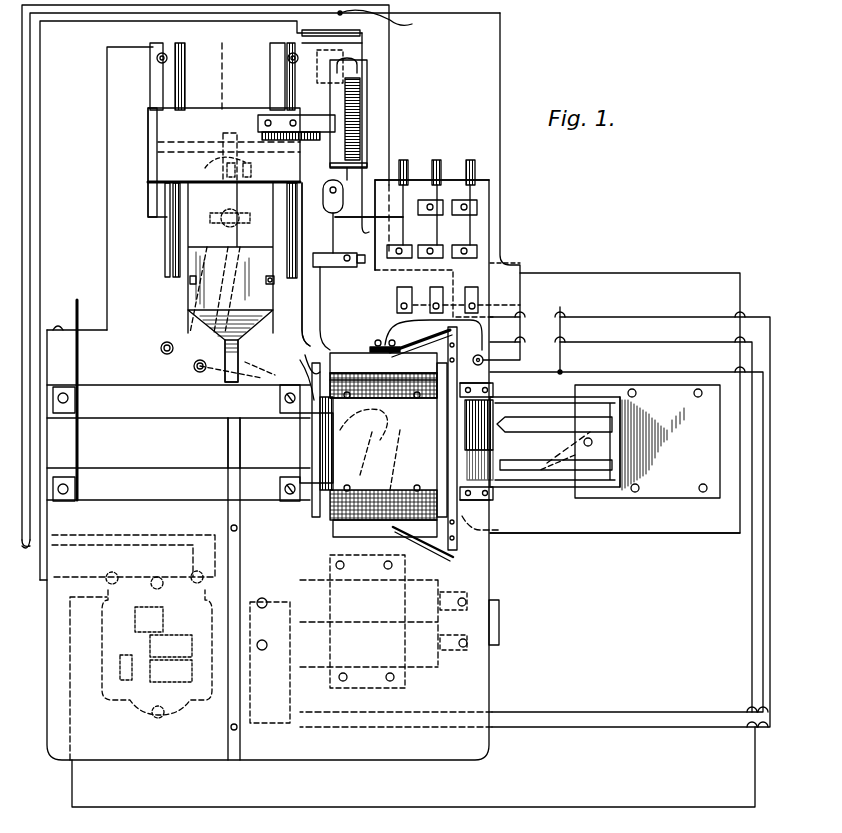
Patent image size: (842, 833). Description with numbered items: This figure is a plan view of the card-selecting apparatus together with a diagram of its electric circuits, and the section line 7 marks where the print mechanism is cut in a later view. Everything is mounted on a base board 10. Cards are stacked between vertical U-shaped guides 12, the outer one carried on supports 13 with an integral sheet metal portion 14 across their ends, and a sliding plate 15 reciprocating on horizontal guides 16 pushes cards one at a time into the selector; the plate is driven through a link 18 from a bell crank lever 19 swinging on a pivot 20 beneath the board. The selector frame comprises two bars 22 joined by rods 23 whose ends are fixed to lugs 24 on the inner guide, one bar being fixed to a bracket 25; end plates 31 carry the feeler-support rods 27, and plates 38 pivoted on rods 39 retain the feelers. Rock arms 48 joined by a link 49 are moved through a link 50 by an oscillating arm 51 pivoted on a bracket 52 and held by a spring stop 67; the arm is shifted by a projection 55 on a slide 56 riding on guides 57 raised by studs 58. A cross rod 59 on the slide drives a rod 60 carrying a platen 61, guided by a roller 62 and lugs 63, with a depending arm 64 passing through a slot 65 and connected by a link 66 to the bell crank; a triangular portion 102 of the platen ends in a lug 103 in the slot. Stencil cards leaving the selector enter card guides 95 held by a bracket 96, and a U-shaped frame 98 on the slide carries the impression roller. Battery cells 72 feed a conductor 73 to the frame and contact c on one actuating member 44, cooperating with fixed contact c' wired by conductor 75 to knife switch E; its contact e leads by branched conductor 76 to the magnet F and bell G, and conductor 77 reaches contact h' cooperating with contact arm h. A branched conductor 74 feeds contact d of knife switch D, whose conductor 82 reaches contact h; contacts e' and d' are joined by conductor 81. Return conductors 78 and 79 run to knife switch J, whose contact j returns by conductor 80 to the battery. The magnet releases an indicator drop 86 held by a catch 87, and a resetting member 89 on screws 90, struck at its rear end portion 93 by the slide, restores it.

The return conductor 78 is at (78, 22).
The branched conductor 76 is at (33, 96).
The return conductor 79 is at (30, 163).
The studs 58 is at (157, 62).
The cross rod 59 is at (190, 140).
The post 7 is at (224, 48).
The slot 65 is at (240, 92).
The slide 56 is at (165, 158).
The guide roller 62 is at (212, 167).
The projection 55 is at (305, 150).
The longitudinally movable rod 60 is at (222, 203).
The guides 57 is at (276, 212).
The U-shaped frame 98 is at (165, 250).
The guide lugs 63 is at (220, 228).
The depending arm 64 is at (232, 228).
The plate 61 is at (248, 264).
The triangular portion 102 is at (232, 332).
The link 50 is at (304, 314).
The lug 103 is at (187, 328).
The bracket 96 is at (78, 355).
The link 66 is at (232, 348).
The link 49 is at (286, 374).
The card guides 95 is at (124, 475).
The bracket 25 is at (300, 440).
The plates 31 is at (333, 447).
The rock arms 48 is at (290, 500).
The horizontal plates or bars 22 is at (312, 508).
The actuating member 44 is at (334, 360).
The rods 23 is at (345, 368).
The rear end portion 93 is at (389, 25).
The resetting member 89 is at (362, 40).
The screws 90 is at (368, 80).
The catch 87 is at (362, 110).
The magnet F is at (370, 122).
The conductor 81 is at (445, 140).
The contact e' is at (450, 181).
The contact d' is at (473, 190).
The indicator drop 86 is at (365, 160).
The knife switch J is at (400, 198).
The spring buffer or stop 67 is at (374, 213).
The oscillating arm 51 is at (340, 232).
The bracket 52 is at (322, 302).
The contact j is at (404, 288).
The contact e is at (435, 281).
The contact d is at (466, 279).
The knife switch E is at (480, 204).
The knife switch D is at (488, 230).
The base board 10 is at (489, 230).
The fixed insulated contact h' is at (433, 331).
The contact arm h is at (401, 337).
The pivot 20 is at (356, 420).
The sheet metal plates 38 is at (350, 490).
The bell crank lever 19 is at (390, 452).
The rods 39 is at (398, 490).
The contact c is at (423, 552).
The fixed insulated contact c' is at (474, 478).
The lugs 24 is at (488, 500).
The battery cells 72 is at (435, 618).
The electric bell or buzzer G is at (128, 655).
The rods 27 is at (487, 807).
The conductor 82 is at (522, 275).
The branched conductor 74 is at (560, 310).
The conductor 80 is at (660, 316).
The conductor 77 is at (652, 342).
The conductor 73 is at (650, 374).
The horizontal guides 16 is at (495, 436).
The U-shaped guides 12 is at (495, 448).
The link 18 is at (495, 505).
The supports 13 is at (548, 500).
The plunger or sliding plate 15 is at (588, 460).
The sheet metal portion 14 is at (670, 490).
The conductor 75 is at (590, 534).